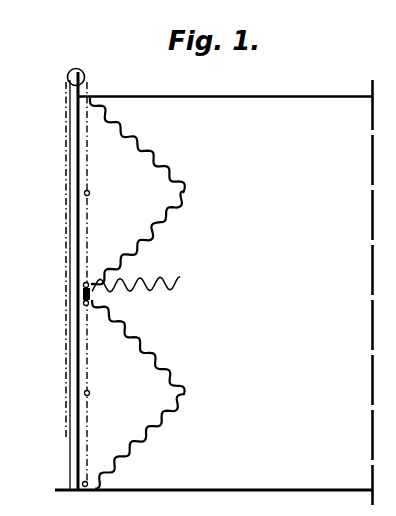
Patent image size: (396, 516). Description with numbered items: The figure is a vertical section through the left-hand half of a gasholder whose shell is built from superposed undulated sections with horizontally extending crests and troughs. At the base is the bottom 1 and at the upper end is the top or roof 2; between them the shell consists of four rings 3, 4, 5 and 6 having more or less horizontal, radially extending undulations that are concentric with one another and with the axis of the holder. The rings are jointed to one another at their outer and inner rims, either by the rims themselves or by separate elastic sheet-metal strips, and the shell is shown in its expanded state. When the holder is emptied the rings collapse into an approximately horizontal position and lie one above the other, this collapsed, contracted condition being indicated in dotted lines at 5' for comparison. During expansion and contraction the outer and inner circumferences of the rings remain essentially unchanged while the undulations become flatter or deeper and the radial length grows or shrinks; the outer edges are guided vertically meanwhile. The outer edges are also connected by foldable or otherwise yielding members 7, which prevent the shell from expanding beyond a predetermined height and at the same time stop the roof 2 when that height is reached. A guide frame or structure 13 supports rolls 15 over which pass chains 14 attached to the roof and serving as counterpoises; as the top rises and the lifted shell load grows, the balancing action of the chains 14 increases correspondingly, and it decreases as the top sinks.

The bottom 1 is at (273, 488).
The top or roof 2 is at (278, 99).
The shell ring 3 is at (153, 432).
The shell ring 4 is at (164, 364).
The shell ring 5 is at (170, 242).
The collapsed contracted condition of the rings 5' is at (143, 294).
The shell ring 6 is at (160, 162).
The foldable or yielding members 7 is at (90, 166).
The guide frame or structure 13 is at (69, 467).
The chains 14 is at (65, 197).
The rolls 15 is at (82, 70).